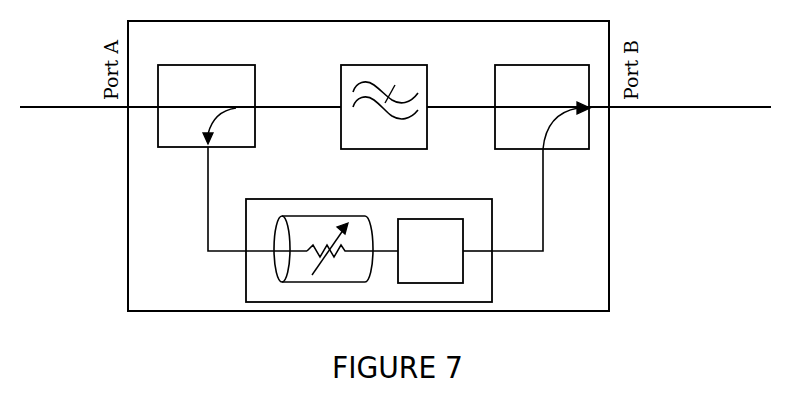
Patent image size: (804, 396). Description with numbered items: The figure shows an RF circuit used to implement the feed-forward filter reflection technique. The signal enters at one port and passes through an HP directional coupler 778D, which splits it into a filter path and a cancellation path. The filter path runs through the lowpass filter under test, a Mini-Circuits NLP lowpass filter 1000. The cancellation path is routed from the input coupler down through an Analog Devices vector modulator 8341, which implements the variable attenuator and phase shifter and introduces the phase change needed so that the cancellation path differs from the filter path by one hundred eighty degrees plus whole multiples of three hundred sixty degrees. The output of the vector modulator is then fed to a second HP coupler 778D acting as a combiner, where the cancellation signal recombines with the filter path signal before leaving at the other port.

The HP 778D directional coupler 778D is at (375, 97).
The Mini-Circuits NLP-1000+ lowpass filter 1000 is at (389, 96).
The Analog Devices AD8341 vector modulator 8341 is at (369, 239).